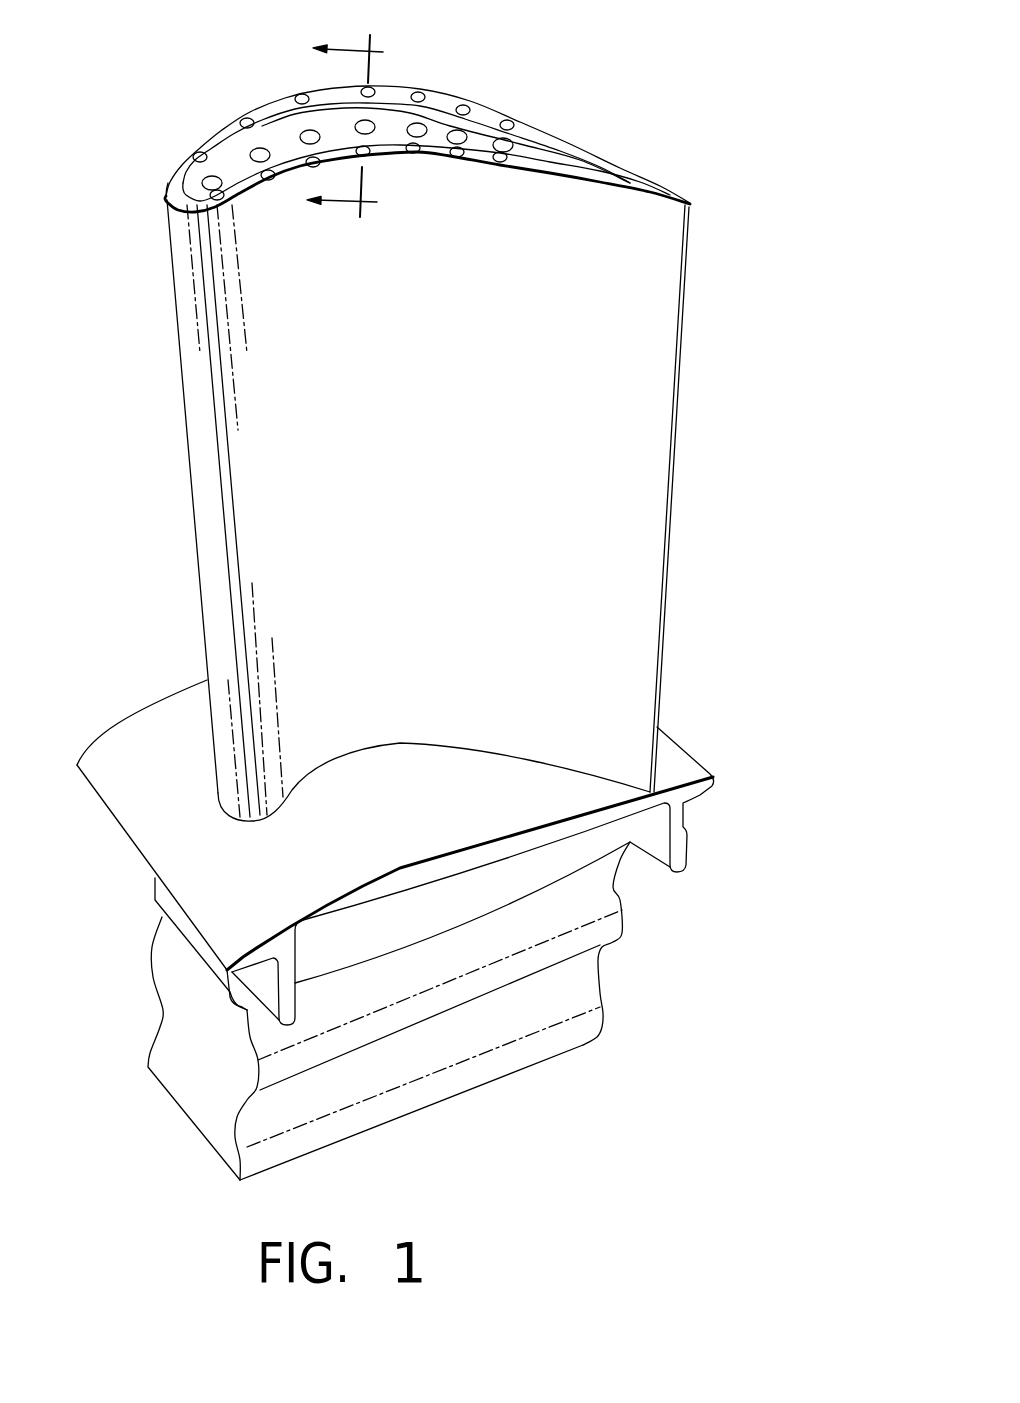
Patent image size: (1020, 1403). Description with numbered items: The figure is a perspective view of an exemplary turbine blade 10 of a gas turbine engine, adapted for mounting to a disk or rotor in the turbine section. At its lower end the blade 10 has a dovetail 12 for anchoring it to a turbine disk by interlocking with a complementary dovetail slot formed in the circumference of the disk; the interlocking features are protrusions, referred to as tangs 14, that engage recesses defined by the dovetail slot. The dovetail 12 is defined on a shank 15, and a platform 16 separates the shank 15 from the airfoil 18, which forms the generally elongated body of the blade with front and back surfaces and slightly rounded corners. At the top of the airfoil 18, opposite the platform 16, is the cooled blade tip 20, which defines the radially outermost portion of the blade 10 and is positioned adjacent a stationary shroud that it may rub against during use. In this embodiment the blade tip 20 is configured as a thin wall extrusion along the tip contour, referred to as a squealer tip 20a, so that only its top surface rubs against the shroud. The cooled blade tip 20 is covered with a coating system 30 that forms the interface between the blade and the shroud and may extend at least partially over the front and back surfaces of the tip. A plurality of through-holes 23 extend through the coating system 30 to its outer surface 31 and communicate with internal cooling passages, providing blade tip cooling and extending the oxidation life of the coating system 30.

The turbine blade 10 is at (438, 599).
The dovetail 12 is at (178, 1012).
The tangs 14 is at (515, 1018).
The shank 15 is at (530, 873).
The platform 16 is at (282, 862).
The airfoil 18 is at (625, 477).
The cooled blade tip 20 is at (384, 120).
The squealer tip 20a is at (185, 172).
The through-holes 23 is at (412, 148).
The coating system 30 is at (153, 210).
The outer surface 31 is at (266, 108).